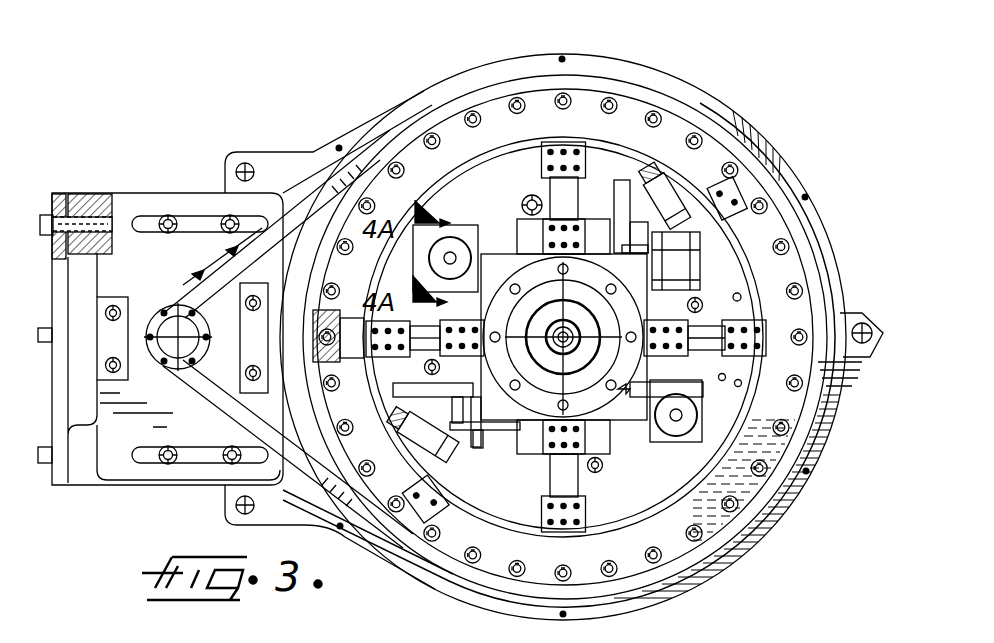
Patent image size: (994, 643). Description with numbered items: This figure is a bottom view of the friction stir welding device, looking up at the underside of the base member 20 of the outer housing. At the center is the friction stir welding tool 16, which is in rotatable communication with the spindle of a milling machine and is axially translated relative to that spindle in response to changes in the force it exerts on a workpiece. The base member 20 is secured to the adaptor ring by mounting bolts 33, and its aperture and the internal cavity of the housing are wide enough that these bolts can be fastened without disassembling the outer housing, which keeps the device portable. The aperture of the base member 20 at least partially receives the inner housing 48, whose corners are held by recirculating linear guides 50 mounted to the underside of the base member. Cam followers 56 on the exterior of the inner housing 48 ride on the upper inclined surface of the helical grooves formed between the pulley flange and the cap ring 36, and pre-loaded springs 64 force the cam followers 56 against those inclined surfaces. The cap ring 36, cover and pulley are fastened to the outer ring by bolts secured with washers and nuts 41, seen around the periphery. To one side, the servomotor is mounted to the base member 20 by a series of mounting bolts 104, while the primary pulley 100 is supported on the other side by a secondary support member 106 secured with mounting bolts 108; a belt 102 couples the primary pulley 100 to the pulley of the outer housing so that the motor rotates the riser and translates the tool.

The friction stir welding tool 16 is at (567, 343).
The base member 20 is at (245, 198).
The mounting bolts 33 is at (530, 195).
The cap ring 36 is at (778, 398).
The nuts 41 is at (803, 330).
The inner housing 48 is at (628, 213).
The recirculating linear guides 50 is at (698, 203).
The cam followers 56 is at (345, 322).
The pre-loaded springs 64 is at (458, 237).
The primary pulley 100 is at (156, 326).
The belt 102 is at (297, 472).
The mounting bolts 104 is at (44, 218).
The secondary support member 106 is at (247, 334).
The mounting bolts 108 is at (232, 368).